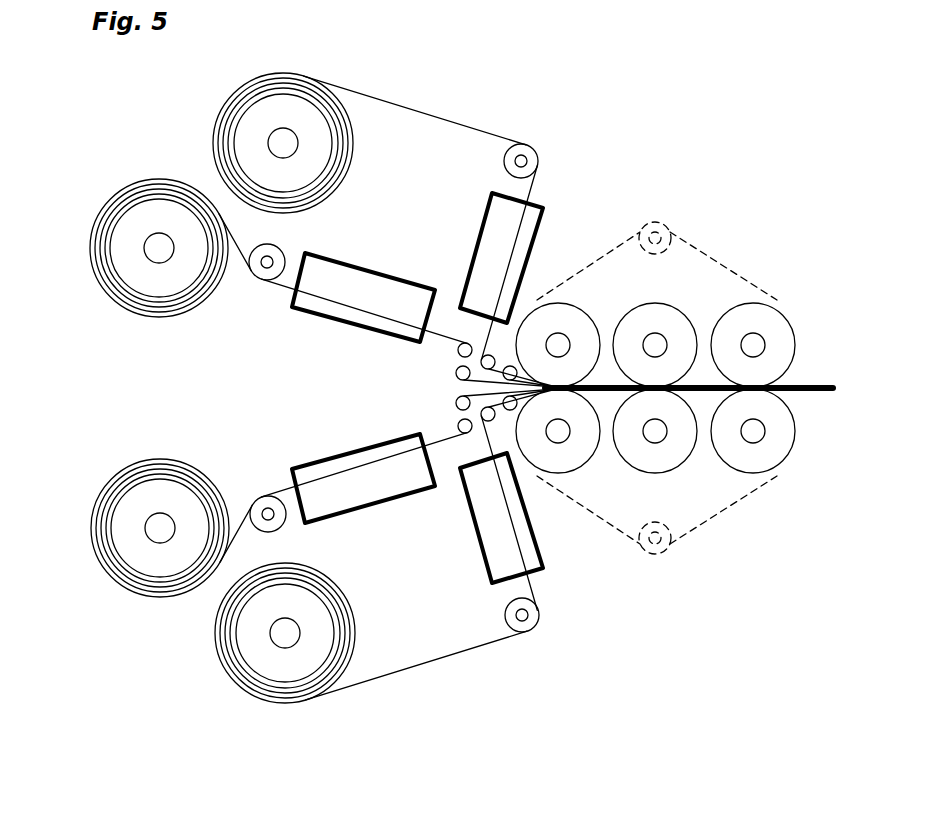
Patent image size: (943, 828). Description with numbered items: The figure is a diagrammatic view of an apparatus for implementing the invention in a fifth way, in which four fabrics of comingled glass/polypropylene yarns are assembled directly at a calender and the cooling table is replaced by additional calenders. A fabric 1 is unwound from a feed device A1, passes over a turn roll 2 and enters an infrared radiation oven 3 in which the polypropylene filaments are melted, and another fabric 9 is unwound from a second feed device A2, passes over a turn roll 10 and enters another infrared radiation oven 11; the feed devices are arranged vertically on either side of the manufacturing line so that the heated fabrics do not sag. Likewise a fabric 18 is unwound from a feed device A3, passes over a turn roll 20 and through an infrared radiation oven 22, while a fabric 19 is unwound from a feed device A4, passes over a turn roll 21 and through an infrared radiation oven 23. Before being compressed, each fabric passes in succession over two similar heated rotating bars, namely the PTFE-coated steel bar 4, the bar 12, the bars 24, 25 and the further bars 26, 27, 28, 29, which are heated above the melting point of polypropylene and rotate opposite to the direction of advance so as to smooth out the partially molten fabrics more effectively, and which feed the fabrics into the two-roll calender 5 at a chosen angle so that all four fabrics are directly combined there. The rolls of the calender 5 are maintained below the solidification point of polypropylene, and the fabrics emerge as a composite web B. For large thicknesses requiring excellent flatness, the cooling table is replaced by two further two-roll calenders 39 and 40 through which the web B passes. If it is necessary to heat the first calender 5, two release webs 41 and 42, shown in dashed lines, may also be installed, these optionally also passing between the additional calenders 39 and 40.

The fabric 1 is at (422, 112).
The turn roll 2 is at (531, 149).
The infrared radiation oven 3 is at (490, 196).
The PTFE-coated steel bar 4 is at (481, 361).
The two-roll calender 5 is at (576, 330).
The fabric 9 is at (427, 663).
The turn roll 10 is at (534, 628).
The infrared radiation oven 11 is at (490, 580).
The PTFE-coated steel bar 12 is at (481, 418).
The fabric 18 is at (268, 291).
The fabric 19 is at (268, 485).
The turn roll 20 is at (284, 254).
The turn roll 21 is at (284, 522).
The infrared radiation oven 22 is at (368, 268).
The infrared radiation oven 23 is at (368, 510).
The heated rotating bar 24 is at (458, 352).
The heated rotating bar 25 is at (458, 426).
The heated rotating bar 26 is at (514, 367).
The heated rotating bar 27 is at (456, 374).
The heated rotating bar 28 is at (456, 403).
The heated rotating bar 29 is at (514, 410).
The calender 39 is at (660, 330).
The calender 40 is at (783, 333).
The release web 41 is at (620, 243).
The release web 42 is at (712, 528).
The feed device A1 is at (247, 146).
The feed device A2 is at (248, 632).
The feed device A3 is at (150, 213).
The feed device A4 is at (155, 565).
The composite web B is at (824, 400).